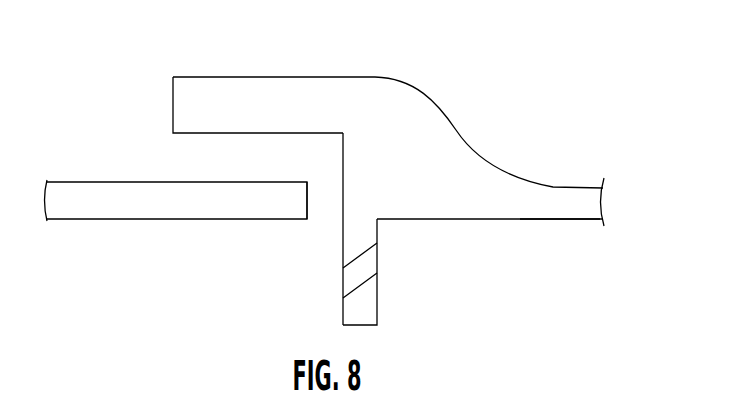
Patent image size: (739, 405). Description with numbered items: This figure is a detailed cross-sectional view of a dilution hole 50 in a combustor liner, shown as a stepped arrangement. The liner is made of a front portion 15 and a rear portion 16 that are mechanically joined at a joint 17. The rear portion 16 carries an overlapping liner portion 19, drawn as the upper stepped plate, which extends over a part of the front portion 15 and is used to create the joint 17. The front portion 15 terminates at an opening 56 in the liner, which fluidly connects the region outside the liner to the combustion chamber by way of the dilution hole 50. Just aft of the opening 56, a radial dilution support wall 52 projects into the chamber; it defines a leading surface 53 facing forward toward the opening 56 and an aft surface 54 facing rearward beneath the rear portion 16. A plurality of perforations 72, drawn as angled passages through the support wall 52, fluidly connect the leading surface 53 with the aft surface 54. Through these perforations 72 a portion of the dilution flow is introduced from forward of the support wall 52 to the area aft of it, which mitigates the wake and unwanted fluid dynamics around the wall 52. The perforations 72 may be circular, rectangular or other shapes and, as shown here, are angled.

The dilution hole 50 is at (325, 176).
The overlapping liner portion 19 is at (212, 77).
The joint 17 is at (440, 71).
The leading surface 53 is at (343, 230).
The radial dilution support wall 52 is at (378, 305).
The aft surface 54 is at (378, 232).
The perforations 72 is at (343, 267).
The rear portion 16 is at (517, 220).
The front portion 15 is at (135, 220).
The opening 56 is at (307, 220).